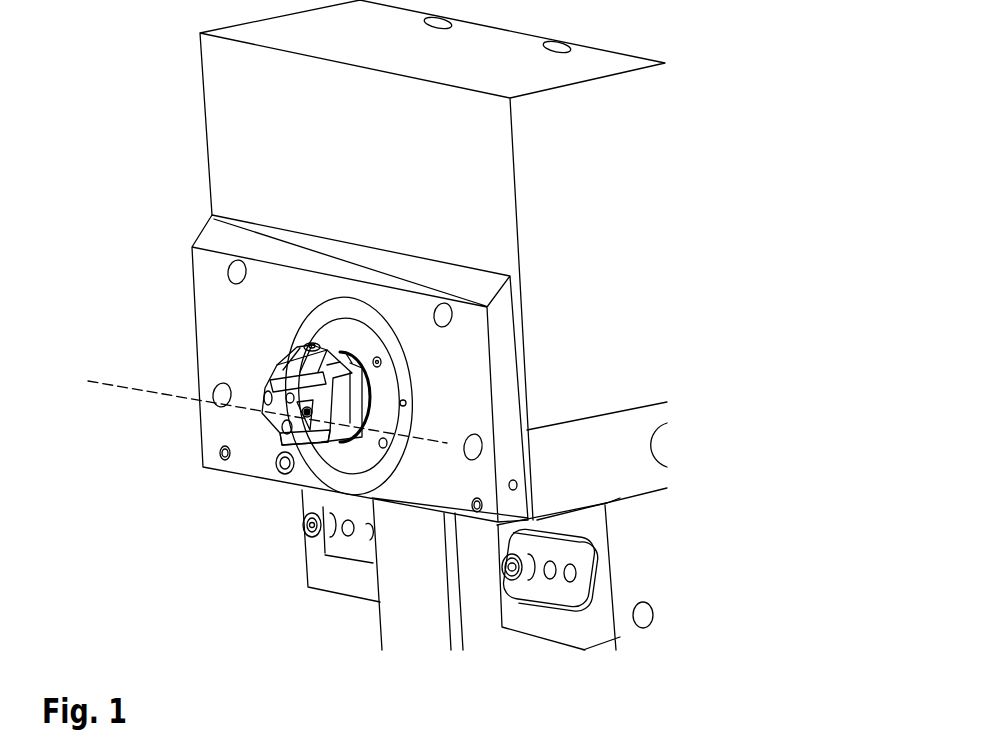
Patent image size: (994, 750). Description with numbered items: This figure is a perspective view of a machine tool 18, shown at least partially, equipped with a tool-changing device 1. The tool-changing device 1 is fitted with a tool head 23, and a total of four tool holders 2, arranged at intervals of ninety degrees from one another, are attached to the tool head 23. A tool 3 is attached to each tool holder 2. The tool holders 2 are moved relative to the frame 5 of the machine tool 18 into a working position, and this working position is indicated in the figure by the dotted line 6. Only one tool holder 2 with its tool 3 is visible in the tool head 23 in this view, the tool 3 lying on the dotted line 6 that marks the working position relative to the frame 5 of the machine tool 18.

The tool-changing device 1 is at (255, 430).
The tool holder 2 is at (300, 427).
The tool 3 is at (308, 420).
The frame 5 is at (478, 613).
The dotted line marking working position 6 is at (163, 395).
The machine tool 18 is at (253, 177).
The tool head 23 is at (338, 408).